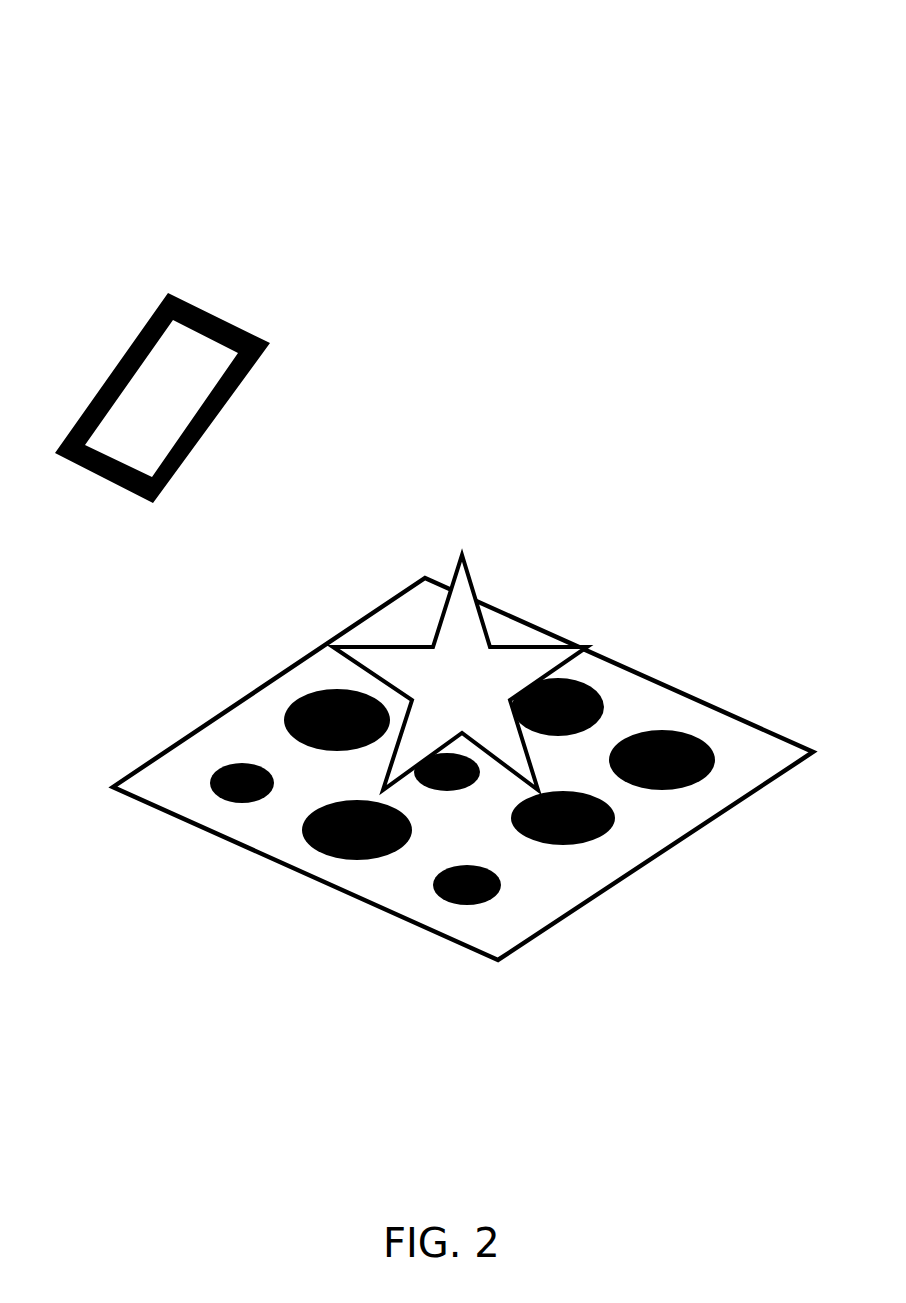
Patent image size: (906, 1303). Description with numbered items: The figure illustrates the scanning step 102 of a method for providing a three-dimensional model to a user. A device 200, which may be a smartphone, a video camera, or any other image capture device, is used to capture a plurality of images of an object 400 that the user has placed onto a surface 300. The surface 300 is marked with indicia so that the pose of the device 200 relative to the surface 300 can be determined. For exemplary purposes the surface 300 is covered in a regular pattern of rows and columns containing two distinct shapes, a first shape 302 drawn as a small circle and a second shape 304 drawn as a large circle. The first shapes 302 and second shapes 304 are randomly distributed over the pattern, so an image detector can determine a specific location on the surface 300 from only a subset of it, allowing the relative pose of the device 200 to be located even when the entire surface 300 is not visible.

The scanning step 102 is at (138, 156).
The device 200 is at (93, 393).
The surface 300 is at (167, 780).
The first shape 302 is at (500, 887).
The second shape 304 is at (715, 771).
The object 400 is at (481, 600).